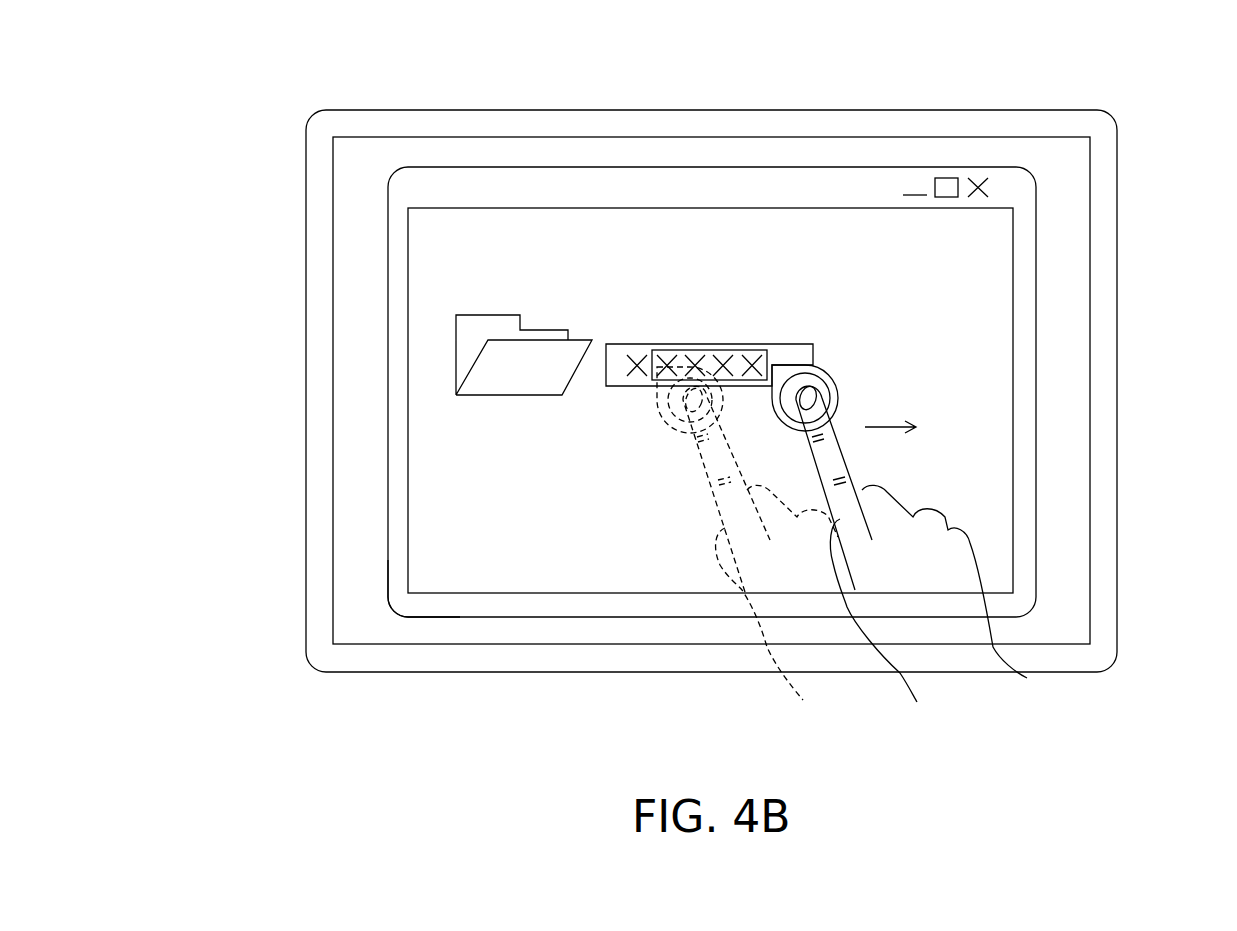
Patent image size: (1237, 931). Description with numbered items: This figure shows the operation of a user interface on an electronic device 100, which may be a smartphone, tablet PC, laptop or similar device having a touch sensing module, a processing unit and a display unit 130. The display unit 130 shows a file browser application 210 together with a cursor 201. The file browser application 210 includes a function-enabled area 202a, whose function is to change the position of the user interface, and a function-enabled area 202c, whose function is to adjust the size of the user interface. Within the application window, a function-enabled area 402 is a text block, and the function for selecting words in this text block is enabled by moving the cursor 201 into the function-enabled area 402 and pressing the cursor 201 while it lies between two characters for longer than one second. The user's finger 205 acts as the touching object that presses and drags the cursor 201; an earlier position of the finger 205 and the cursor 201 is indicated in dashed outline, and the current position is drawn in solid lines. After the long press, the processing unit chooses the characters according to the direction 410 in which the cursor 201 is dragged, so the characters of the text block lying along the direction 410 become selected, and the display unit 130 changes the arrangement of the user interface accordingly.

The electronic device 100 is at (1117, 188).
The display unit 130 is at (1090, 287).
The file browser application 210 is at (1036, 390).
The function-enabled area 202a is at (712, 183).
The function-enabled area 202c is at (393, 607).
The function-enabled area 402 is at (707, 343).
The cursor 201 is at (820, 370).
The direction 410 is at (893, 424).
The user's finger 205 is at (907, 685).